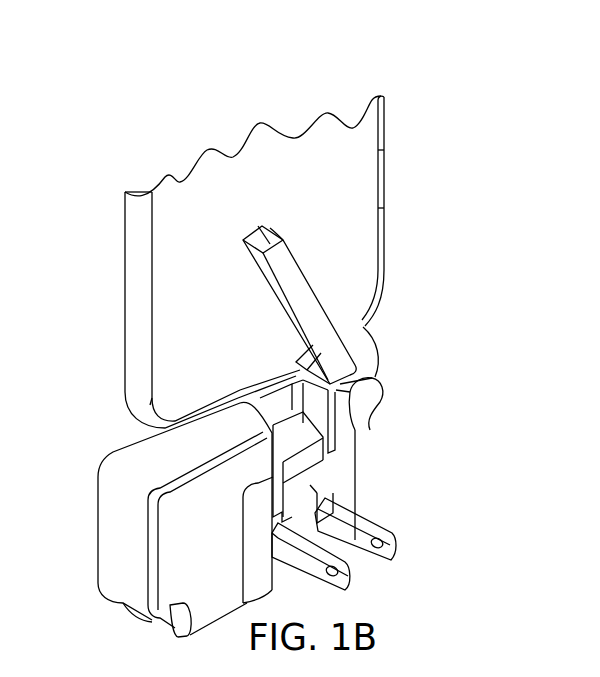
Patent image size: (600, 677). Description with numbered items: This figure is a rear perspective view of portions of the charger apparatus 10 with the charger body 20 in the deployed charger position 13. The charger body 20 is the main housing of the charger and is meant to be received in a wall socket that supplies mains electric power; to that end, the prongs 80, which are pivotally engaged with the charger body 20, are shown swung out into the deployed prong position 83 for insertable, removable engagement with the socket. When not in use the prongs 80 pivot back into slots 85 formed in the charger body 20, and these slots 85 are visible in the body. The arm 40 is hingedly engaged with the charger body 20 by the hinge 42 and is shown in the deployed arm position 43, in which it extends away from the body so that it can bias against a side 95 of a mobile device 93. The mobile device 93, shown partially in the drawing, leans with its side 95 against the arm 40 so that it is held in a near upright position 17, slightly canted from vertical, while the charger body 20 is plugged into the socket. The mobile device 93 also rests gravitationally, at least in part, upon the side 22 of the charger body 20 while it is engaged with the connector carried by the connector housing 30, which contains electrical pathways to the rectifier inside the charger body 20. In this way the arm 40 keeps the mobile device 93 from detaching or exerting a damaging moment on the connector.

The charger apparatus 10 is at (302, 52).
The deployed charger position 13 is at (379, 52).
The near upright position 17 is at (100, 160).
The charger body 20 is at (120, 552).
The side 22 is at (170, 462).
The connector housing 30 is at (273, 403).
The arm 40 is at (357, 335).
The hinge 42 is at (365, 400).
The deployed arm position 43 is at (313, 278).
The prongs 80 is at (378, 567).
The deployed prong position 83 is at (375, 525).
The slots 85 is at (330, 483).
The mobile device 93 is at (362, 165).
The side 95 is at (357, 205).